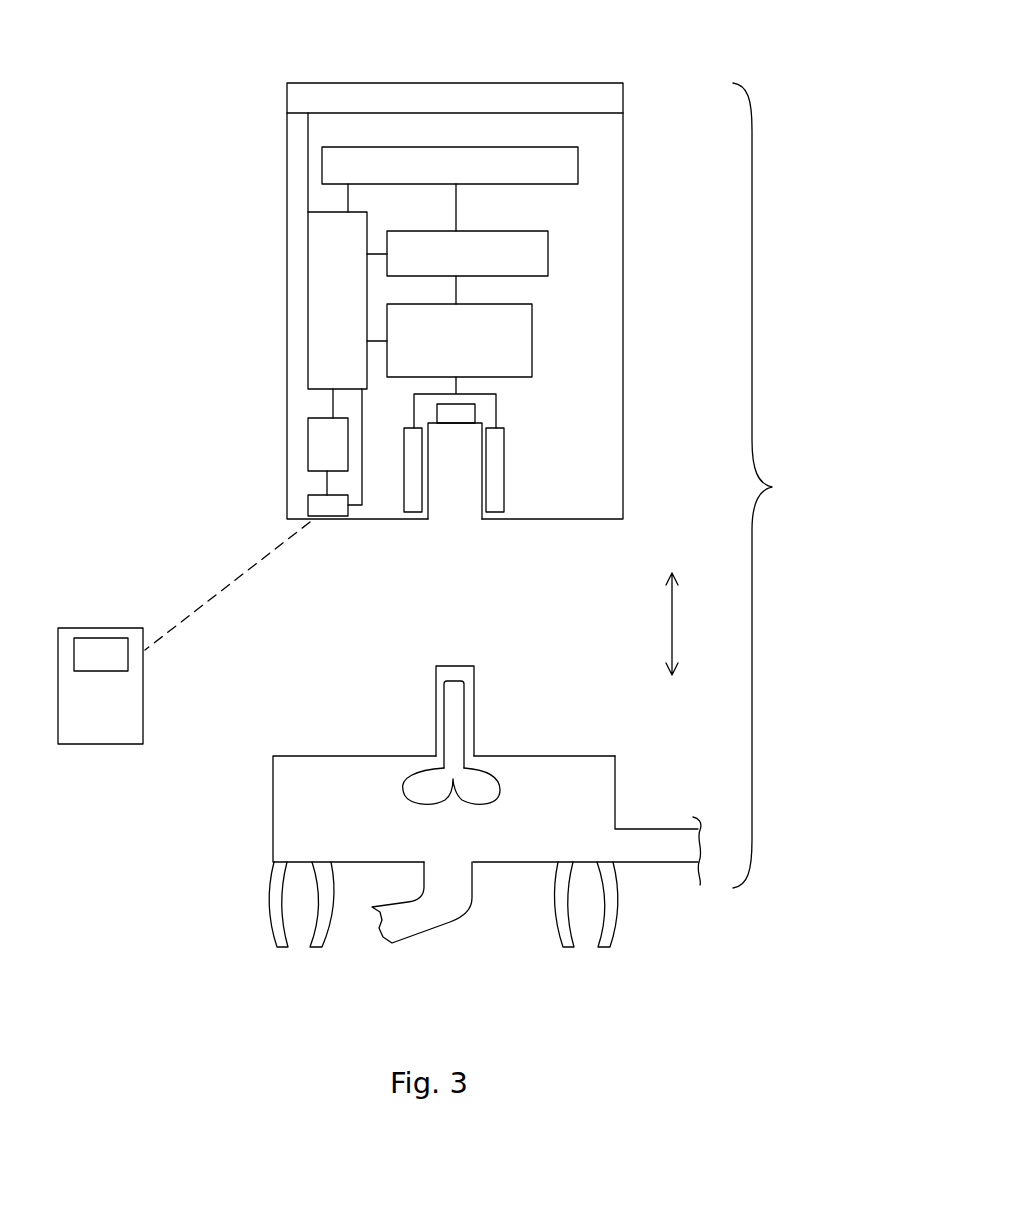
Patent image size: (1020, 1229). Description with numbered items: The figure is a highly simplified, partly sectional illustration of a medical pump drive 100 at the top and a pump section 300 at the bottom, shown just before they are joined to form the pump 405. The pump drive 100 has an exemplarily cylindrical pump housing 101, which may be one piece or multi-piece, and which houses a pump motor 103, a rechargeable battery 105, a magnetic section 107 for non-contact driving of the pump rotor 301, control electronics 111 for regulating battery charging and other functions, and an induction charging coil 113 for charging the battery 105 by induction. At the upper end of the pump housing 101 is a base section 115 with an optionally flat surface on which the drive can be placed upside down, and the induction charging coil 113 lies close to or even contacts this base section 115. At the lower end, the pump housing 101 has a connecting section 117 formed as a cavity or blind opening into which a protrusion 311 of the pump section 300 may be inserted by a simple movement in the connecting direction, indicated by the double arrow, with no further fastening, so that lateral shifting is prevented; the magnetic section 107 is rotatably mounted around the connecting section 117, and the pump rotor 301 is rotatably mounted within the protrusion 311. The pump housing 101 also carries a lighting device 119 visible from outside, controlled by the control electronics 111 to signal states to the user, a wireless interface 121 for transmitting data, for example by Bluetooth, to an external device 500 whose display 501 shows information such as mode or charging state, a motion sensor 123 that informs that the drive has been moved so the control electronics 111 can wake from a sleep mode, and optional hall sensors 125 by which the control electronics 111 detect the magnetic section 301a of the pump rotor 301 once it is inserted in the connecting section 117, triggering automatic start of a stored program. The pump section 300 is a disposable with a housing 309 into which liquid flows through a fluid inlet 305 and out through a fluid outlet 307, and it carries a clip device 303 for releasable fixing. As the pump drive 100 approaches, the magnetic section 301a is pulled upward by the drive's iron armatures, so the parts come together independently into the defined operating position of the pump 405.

The pump drive 100 is at (239, 292).
The pump housing 101 is at (277, 464).
The pump motor 103 is at (459, 366).
The rechargeable battery 105 is at (467, 267).
The magnetic section 107 is at (415, 497).
The control electronics 111 is at (347, 300).
The induction charging coil 113 is at (450, 189).
The base section 115 is at (327, 76).
The connecting section 117 is at (458, 508).
The lighting device 119 is at (455, 99).
The wireless interface 121 is at (315, 433).
The motion sensor 123 is at (322, 503).
The hall sensors 125 is at (465, 415).
The pump section 300 is at (214, 815).
The pump rotor 301 is at (479, 787).
The magnetic section of the pump rotor 301a is at (455, 718).
The clip device 303 is at (277, 920).
The fluid inlet 305 is at (402, 927).
The fluid outlet 307 is at (640, 842).
The housing of the pump section 309 is at (314, 756).
The protrusion 311 is at (474, 671).
The pump 405 is at (776, 485).
The external device 500 is at (127, 712).
The display 501 is at (115, 655).